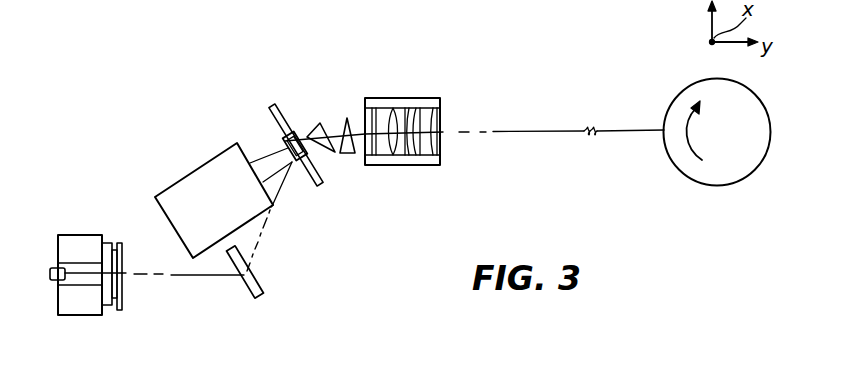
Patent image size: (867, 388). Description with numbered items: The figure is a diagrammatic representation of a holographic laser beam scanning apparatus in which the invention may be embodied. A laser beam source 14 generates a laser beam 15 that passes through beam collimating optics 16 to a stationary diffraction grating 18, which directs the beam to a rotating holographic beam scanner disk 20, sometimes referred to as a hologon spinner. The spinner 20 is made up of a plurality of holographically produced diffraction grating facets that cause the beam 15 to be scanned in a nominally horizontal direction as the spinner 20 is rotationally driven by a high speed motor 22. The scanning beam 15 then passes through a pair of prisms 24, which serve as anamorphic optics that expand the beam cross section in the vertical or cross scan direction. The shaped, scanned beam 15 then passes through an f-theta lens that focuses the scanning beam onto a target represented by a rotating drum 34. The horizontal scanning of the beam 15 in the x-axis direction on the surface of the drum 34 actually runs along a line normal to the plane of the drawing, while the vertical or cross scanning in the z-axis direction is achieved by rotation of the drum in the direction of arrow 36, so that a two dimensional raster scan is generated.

The laser beam source 14 is at (55, 283).
The laser beam 15 is at (174, 277).
The beam collimating optics 16 is at (80, 318).
The stationary diffraction grating 18 is at (243, 262).
The holographic beam scanner disk 20 is at (290, 117).
The high speed motor 22 is at (190, 177).
The pair of prisms 24 is at (310, 133).
The rotating drum 34 is at (665, 107).
The arrow 36 is at (685, 147).